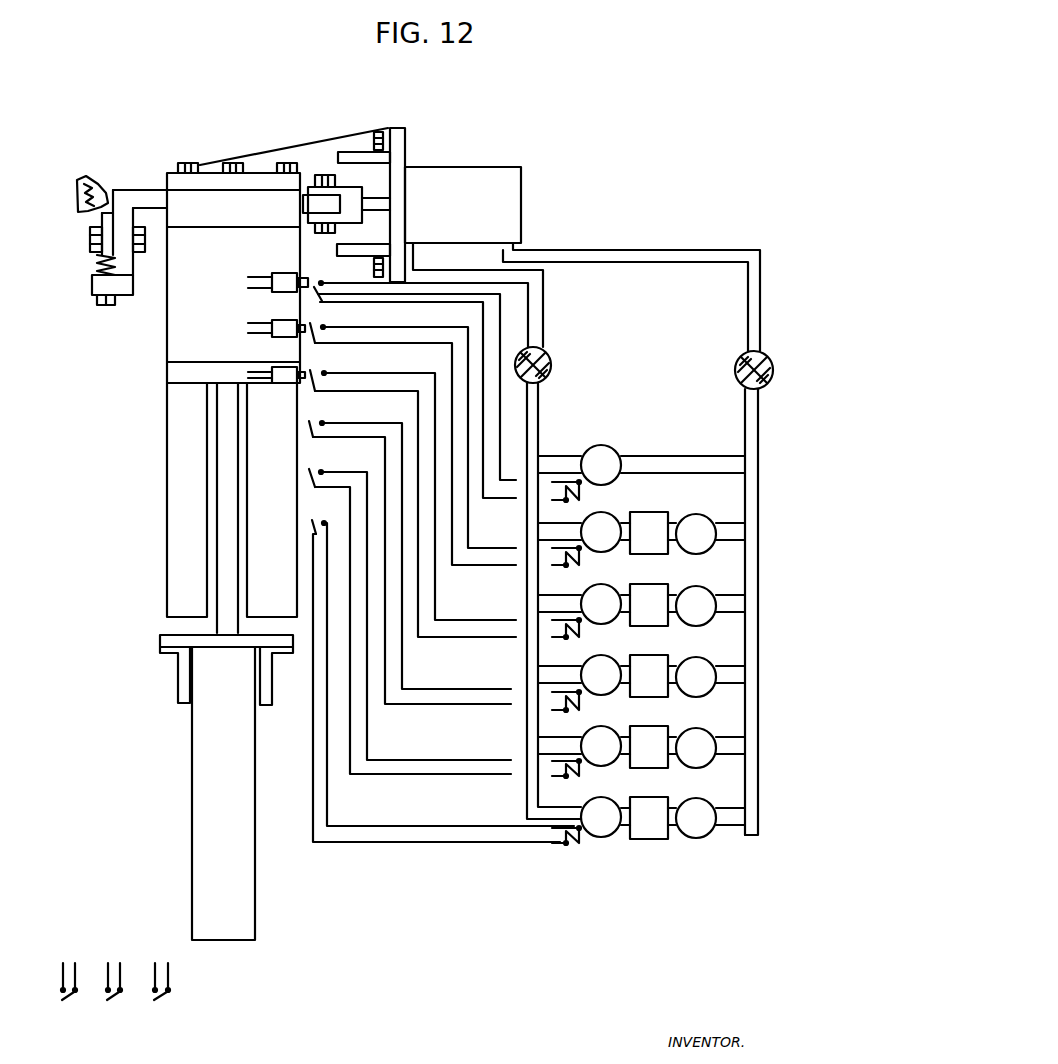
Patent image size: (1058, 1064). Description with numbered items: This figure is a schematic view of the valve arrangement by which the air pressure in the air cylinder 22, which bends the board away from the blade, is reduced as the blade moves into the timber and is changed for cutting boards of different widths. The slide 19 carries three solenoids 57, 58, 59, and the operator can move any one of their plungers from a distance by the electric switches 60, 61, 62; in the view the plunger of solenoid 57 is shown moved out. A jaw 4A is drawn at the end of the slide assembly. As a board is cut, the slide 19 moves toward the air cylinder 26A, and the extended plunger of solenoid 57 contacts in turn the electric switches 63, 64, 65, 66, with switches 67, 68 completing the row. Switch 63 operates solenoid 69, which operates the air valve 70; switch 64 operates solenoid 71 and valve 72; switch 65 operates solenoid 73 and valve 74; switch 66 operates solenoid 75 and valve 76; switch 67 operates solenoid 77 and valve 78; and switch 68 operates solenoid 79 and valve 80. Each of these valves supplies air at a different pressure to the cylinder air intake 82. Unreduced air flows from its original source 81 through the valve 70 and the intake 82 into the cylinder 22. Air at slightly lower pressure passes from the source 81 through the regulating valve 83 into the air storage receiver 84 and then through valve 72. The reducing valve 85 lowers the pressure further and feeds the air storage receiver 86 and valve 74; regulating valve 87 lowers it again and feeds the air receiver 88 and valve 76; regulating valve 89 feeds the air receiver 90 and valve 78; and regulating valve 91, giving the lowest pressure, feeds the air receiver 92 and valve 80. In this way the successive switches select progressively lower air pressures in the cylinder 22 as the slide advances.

The contact jaw 4A is at (84, 178).
The slide 19 is at (164, 328).
The air cylinder 22 is at (449, 161).
The air cylinder 26A is at (197, 758).
The solenoid 57 is at (281, 271).
The solenoid 58 is at (289, 316).
The solenoid 59 is at (289, 359).
The electric switch 60 is at (64, 1003).
The electric switch 61 is at (112, 1003).
The electric switch 62 is at (158, 1003).
The electric switch 63 is at (318, 302).
The electric switch 64 is at (350, 317).
The electric switch 65 is at (318, 370).
The electric switch 66 is at (315, 417).
The electric switch 67 is at (315, 465).
The electric switch 68 is at (315, 519).
The solenoid 69 is at (574, 495).
The air valve 70 is at (617, 481).
The solenoid 71 is at (575, 567).
The valve 72 is at (612, 555).
The solenoid 73 is at (575, 639).
The valve 74 is at (612, 627).
The solenoid 75 is at (575, 709).
The valve 76 is at (612, 698).
The solenoid 77 is at (572, 778).
The valve 78 is at (608, 769).
The solenoid 79 is at (572, 843).
The valve 80 is at (605, 840).
The original source 81 is at (747, 840).
The cylinder air intake 82 is at (416, 259).
The regulating valve 83 is at (710, 556).
The air storage receiver 84 is at (652, 556).
The reducing valve 85 is at (712, 628).
The air storage receiver 86 is at (652, 628).
The regulating valve 87 is at (712, 699).
The air receiver 88 is at (652, 699).
The regulating valve 89 is at (708, 770).
The air receiver 90 is at (648, 770).
The regulating valve 91 is at (705, 840).
The air receiver 92 is at (650, 841).